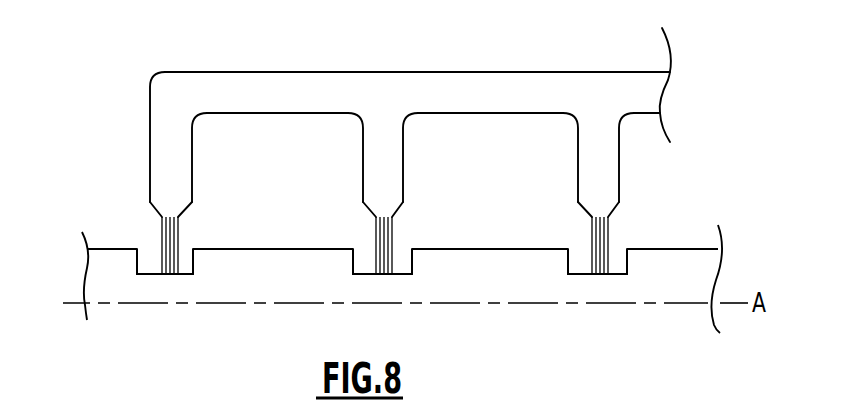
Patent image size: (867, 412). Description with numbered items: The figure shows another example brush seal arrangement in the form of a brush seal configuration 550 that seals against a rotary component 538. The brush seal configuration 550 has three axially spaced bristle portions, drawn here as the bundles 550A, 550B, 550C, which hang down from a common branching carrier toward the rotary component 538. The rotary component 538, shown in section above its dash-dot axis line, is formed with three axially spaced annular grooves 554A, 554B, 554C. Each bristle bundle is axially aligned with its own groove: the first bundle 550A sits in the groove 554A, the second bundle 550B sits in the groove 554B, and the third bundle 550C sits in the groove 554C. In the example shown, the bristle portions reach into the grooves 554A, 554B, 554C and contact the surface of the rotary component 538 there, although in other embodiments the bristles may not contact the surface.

The brush seal configuration 550 is at (112, 66).
The first wire bundle 550A is at (183, 242).
The second wire bundle 550B is at (395, 242).
The third wire bundle 550C is at (612, 242).
The annular groove 554A is at (157, 258).
The annular groove 554B is at (369, 257).
The annular groove 554C is at (584, 257).
The rotary component 538 is at (650, 273).